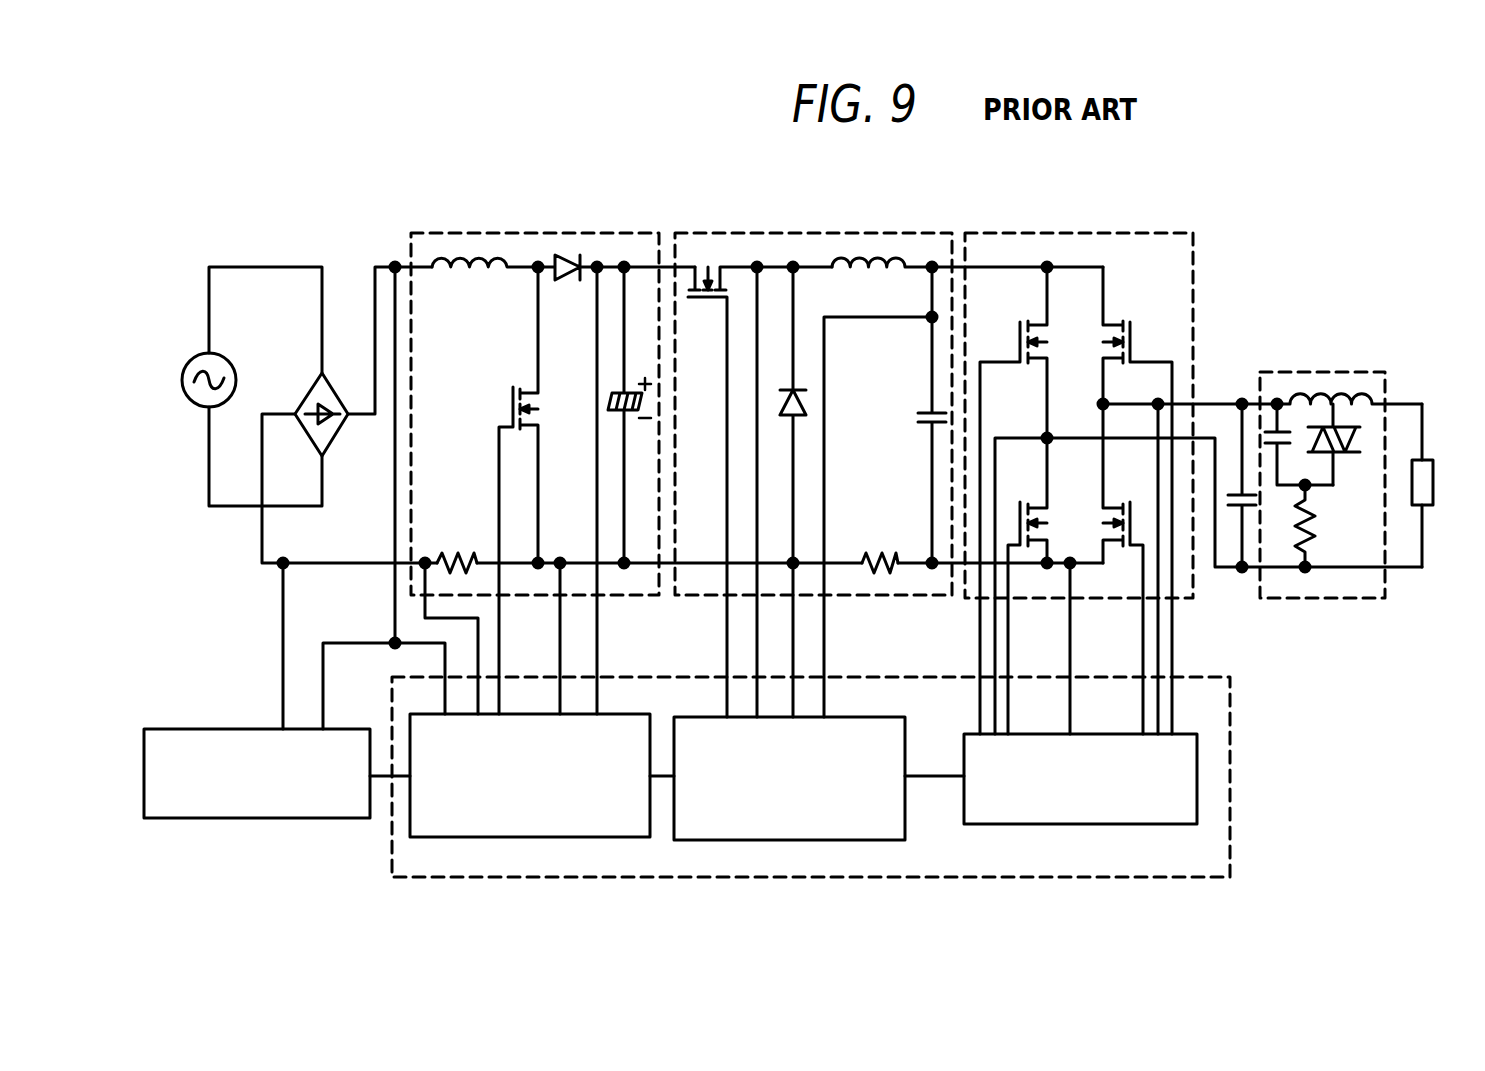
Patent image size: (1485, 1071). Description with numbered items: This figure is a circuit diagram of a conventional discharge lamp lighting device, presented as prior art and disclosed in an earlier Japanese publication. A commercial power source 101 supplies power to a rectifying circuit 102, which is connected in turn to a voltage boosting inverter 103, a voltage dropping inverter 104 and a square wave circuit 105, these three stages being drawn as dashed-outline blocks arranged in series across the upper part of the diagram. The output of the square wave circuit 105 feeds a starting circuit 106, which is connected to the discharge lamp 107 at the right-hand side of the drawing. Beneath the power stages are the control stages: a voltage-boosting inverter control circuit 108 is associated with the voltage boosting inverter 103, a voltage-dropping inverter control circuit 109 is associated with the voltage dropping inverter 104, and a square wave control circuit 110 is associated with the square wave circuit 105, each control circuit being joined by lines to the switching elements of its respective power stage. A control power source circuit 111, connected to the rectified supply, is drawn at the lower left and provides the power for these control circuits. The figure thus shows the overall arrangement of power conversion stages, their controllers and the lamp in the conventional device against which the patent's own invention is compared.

The commercial power source 101 is at (195, 362).
The rectifying circuit 102 is at (306, 393).
The voltage boosting inverter 103 is at (520, 233).
The voltage dropping inverter 104 is at (794, 233).
The square wave circuit 105 is at (1064, 233).
The starting circuit 106 is at (1316, 372).
The discharge lamp 107 is at (1433, 470).
The voltage-boosting inverter control circuit 108 is at (575, 837).
The voltage-dropping inverter control circuit 109 is at (781, 840).
The square wave control circuit 110 is at (1068, 824).
The control power source circuit 111 is at (240, 729).